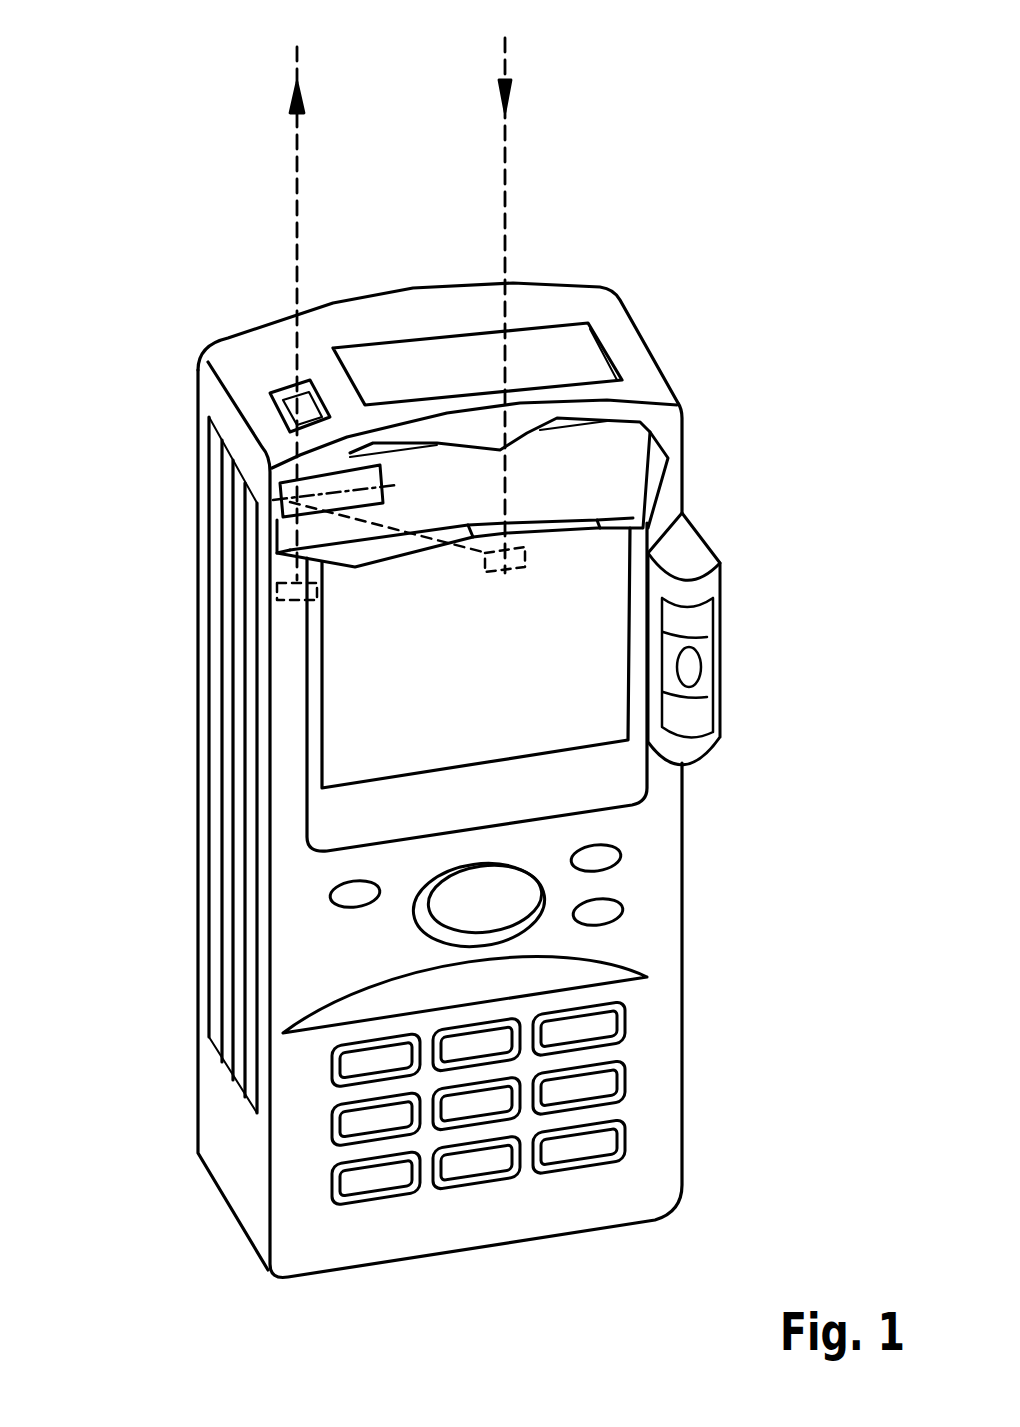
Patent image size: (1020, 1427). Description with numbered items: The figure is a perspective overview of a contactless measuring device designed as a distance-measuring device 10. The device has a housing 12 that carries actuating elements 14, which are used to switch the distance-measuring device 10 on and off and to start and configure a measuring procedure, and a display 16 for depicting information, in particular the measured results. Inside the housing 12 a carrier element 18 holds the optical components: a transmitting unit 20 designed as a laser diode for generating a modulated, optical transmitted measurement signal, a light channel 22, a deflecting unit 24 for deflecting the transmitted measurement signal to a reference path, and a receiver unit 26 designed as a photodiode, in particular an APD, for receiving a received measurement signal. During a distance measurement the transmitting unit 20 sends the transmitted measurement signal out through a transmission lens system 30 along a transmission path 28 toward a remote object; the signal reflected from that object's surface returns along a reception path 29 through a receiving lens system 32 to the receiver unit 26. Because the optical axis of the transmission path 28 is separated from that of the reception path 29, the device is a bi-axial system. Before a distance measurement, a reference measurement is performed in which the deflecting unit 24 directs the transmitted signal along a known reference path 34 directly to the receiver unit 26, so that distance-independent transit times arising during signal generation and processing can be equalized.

The distance-measuring device 10 is at (676, 352).
The housing 12 is at (274, 335).
The actuating elements 14 is at (705, 973).
The display 16 is at (348, 707).
The carrier element 18 is at (617, 480).
The transmitting unit 20 is at (277, 603).
The light channel 22 is at (296, 538).
The deflecting unit 24 is at (300, 493).
The receiver unit 26 is at (527, 553).
The transmission path 28 is at (310, 332).
The reception path 29 is at (486, 195).
The transmission lens system 30 is at (288, 392).
The receiving lens system 32 is at (556, 352).
The reference path 34 is at (387, 527).